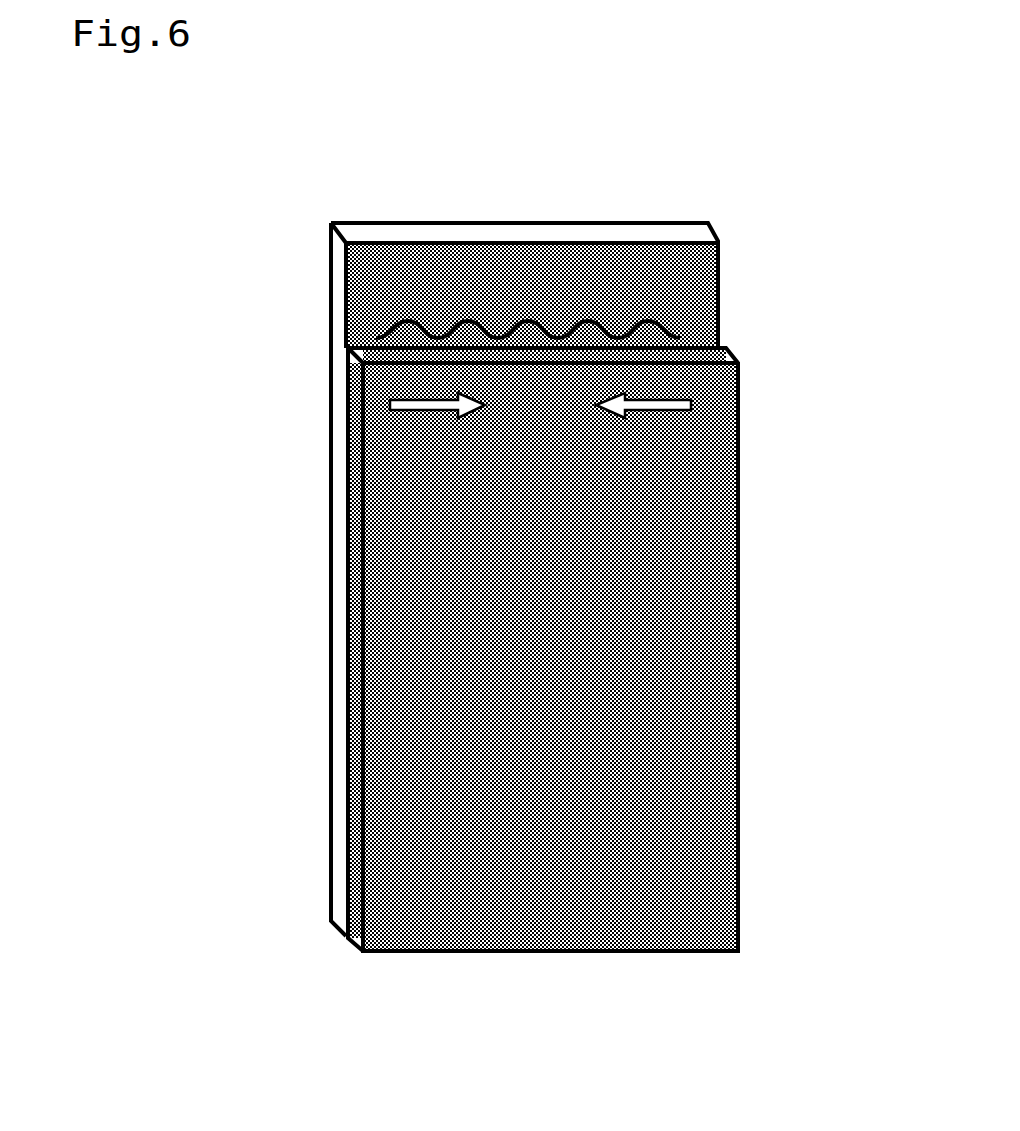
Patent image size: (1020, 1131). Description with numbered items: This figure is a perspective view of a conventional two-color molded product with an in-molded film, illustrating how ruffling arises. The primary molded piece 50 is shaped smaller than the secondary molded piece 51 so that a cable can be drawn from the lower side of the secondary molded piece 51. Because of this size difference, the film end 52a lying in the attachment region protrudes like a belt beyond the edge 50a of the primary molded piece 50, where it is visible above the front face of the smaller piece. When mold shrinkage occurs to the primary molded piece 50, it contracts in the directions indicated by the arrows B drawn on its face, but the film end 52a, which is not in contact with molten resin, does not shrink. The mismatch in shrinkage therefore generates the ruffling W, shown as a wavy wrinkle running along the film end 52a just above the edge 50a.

The primary molded piece 50 is at (657, 718).
The edge of primary molded piece 50a is at (385, 328).
The secondary molded piece 51 is at (330, 568).
The film end 52a is at (510, 280).
The ruffling W is at (583, 310).
The arrows indicating shrinkage directions B is at (540, 402).